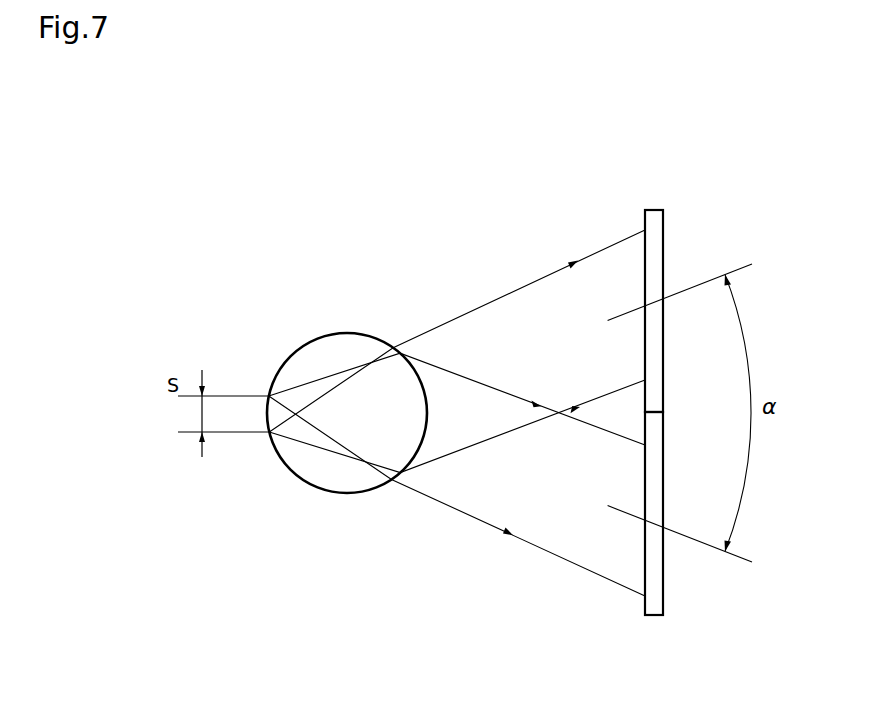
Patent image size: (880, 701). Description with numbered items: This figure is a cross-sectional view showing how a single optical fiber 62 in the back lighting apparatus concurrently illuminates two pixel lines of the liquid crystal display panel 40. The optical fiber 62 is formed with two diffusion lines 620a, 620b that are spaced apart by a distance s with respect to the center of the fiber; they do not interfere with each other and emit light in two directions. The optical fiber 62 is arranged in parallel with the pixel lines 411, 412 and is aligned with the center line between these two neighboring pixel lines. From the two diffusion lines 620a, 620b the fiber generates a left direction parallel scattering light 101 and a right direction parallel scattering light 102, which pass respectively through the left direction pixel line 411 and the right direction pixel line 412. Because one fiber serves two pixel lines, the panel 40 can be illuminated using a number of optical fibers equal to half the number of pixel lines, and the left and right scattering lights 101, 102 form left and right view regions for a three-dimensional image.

The liquid crystal display panel 40 is at (689, 381).
The left direction pixel line 411 is at (655, 238).
The right direction pixel line 412 is at (658, 586).
The optical fiber 62 is at (345, 333).
The left direction parallel scattering light 101 is at (468, 307).
The right direction parallel scattering light 102 is at (470, 520).
The diffusion line 620a is at (267, 395).
The diffusion line 620b is at (268, 434).